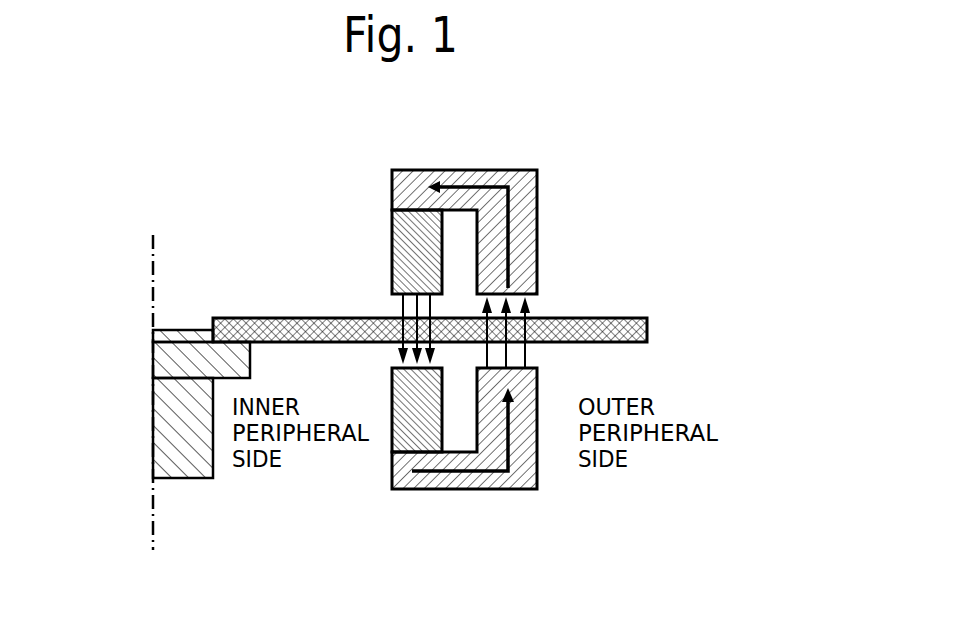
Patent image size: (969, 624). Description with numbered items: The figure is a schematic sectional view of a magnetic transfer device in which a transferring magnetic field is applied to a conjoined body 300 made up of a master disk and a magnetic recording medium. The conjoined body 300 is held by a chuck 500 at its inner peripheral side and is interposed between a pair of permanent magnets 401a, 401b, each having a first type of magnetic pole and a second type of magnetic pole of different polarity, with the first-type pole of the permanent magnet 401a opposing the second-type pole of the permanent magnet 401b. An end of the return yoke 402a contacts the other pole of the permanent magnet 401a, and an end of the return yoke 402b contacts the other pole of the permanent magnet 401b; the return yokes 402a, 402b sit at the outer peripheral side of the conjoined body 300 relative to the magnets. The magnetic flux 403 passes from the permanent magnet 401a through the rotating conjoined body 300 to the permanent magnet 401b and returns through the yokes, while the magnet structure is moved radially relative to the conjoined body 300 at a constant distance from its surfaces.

The conjoined body 300 is at (636, 318).
The permanent magnet 401a is at (392, 234).
The permanent magnet 401b is at (392, 437).
The return yoke 402a is at (580, 147).
The return yoke 402b is at (527, 490).
The magnetic flux 403 is at (403, 310).
The chuck 500 is at (153, 458).